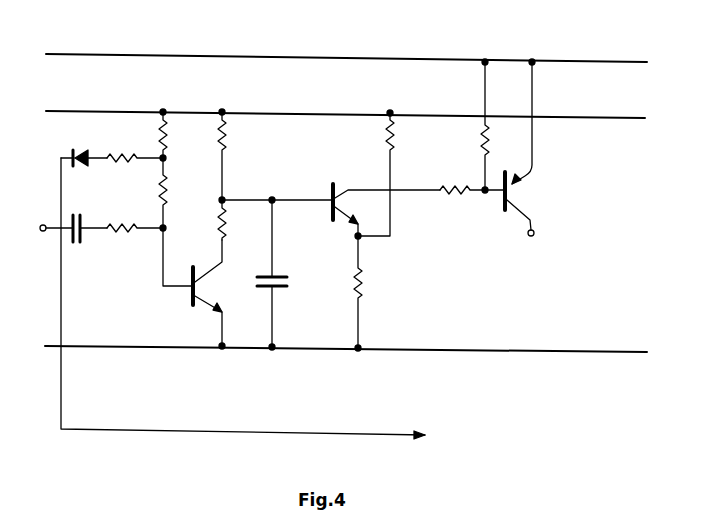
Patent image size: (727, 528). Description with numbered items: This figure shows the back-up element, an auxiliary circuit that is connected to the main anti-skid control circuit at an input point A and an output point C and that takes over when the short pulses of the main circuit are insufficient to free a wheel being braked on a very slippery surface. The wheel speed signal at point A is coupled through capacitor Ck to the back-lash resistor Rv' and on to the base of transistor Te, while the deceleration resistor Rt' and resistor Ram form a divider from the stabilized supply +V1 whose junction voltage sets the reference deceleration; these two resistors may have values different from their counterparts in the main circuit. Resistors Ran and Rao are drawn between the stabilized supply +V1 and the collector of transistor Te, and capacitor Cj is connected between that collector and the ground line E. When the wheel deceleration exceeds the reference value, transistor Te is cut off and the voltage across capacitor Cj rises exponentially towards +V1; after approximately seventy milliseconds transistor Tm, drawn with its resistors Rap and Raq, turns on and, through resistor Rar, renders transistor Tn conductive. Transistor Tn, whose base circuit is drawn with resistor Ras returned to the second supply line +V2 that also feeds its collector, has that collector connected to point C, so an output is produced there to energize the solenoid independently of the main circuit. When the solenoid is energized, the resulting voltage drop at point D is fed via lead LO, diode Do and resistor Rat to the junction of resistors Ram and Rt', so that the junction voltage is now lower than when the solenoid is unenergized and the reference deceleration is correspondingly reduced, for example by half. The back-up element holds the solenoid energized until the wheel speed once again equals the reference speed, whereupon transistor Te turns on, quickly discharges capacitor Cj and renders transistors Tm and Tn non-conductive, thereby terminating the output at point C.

The supply voltage +V2 rail V2 is at (346, 49).
The stabilized voltage V1 is at (345, 107).
The ground line E is at (622, 352).
The lead LO is at (230, 430).
The point D is at (421, 418).
The diode Do is at (83, 145).
The resistor Rat is at (131, 157).
The resistor Ram is at (168, 132).
The deceleration resistor Rt' is at (177, 193).
The point A is at (41, 218).
The capacitor Ck is at (67, 222).
The back-lash resistor Rv' is at (136, 239).
The transistor Te is at (212, 294).
The resistor Ran is at (244, 135).
The resistor Rao is at (244, 222).
The capacitor Cj is at (281, 270).
The transistor Tm is at (386, 211).
The resistor Rap is at (412, 140).
The resistor Raq is at (382, 280).
The resistor Rar is at (461, 202).
The resistor Ras is at (486, 131).
The transistor Tn is at (526, 144).
The point C is at (530, 246).